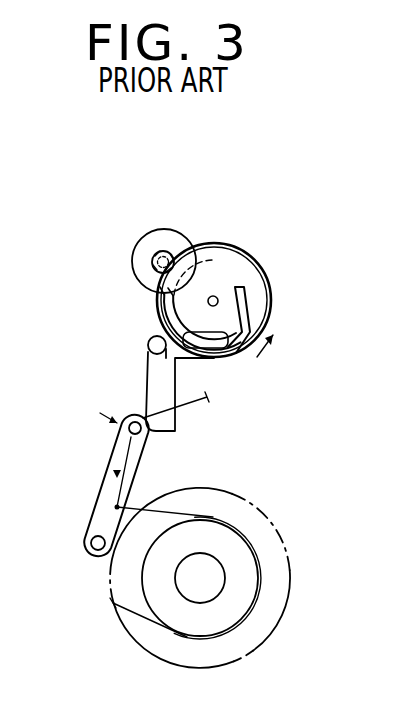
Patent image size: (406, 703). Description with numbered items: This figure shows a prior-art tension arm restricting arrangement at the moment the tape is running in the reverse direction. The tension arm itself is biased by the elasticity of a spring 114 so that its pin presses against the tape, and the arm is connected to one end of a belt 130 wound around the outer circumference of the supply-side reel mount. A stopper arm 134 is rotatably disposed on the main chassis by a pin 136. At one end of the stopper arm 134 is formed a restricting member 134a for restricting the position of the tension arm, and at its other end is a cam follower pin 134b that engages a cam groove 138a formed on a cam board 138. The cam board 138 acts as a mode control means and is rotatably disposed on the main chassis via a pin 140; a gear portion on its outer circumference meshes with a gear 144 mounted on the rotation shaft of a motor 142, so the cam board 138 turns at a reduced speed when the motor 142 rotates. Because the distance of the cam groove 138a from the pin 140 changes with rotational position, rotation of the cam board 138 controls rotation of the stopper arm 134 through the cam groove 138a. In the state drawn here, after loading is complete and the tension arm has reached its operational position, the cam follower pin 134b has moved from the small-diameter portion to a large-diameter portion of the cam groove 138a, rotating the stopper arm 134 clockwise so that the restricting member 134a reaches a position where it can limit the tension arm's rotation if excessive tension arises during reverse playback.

The spring 114 is at (105, 490).
The belt 130 is at (257, 548).
The stopper arm 134 is at (175, 384).
The restricting member 134a is at (150, 436).
The cam follower pin 134b is at (237, 352).
The pin 136 is at (149, 342).
The cam board 138 is at (242, 250).
The cam groove 138a is at (237, 303).
The pin 140 is at (213, 296).
The motor 142 is at (168, 228).
The gear 144 is at (152, 262).